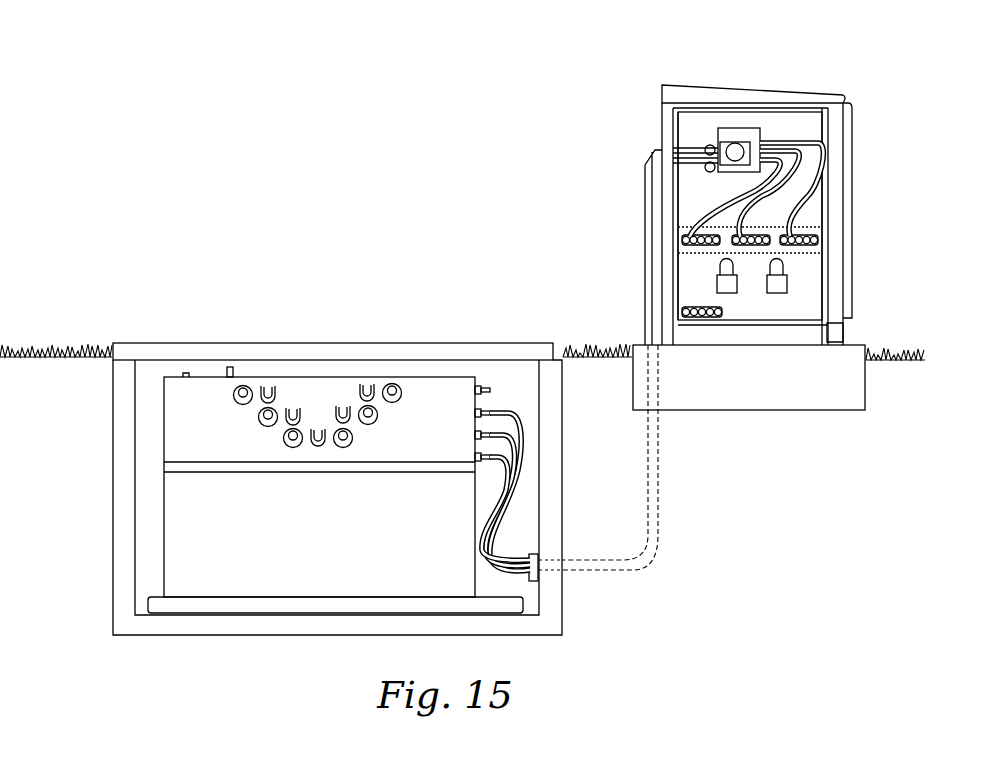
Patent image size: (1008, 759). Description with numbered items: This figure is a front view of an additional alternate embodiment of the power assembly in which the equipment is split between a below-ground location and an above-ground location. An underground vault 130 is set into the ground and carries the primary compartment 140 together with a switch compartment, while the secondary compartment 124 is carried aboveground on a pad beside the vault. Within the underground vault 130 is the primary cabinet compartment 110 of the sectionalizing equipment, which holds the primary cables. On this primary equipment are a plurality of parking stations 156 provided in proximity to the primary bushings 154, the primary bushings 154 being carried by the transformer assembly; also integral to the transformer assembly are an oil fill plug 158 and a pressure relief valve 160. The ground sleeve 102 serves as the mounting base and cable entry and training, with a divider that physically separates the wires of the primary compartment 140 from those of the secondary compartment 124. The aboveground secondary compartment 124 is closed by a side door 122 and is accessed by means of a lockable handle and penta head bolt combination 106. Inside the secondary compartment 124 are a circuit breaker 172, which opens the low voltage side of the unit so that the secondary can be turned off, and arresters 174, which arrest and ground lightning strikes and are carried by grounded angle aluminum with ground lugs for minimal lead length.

The ground sleeve 102 is at (150, 603).
The lockable handle and penta head bolt combination 106 is at (852, 105).
The primary cabinet compartment 110 is at (164, 433).
The side door 122 is at (852, 212).
The secondary compartment 124 is at (800, 305).
The underground vault 130 is at (136, 492).
The primary compartment 140 is at (280, 560).
The primary bushings 154 is at (372, 418).
The parking stations 156 is at (318, 428).
The oil fill plug 158 is at (186, 372).
The pressure relief valve 160 is at (230, 367).
The circuit breaker 172 is at (737, 148).
The arresters 174 is at (777, 290).